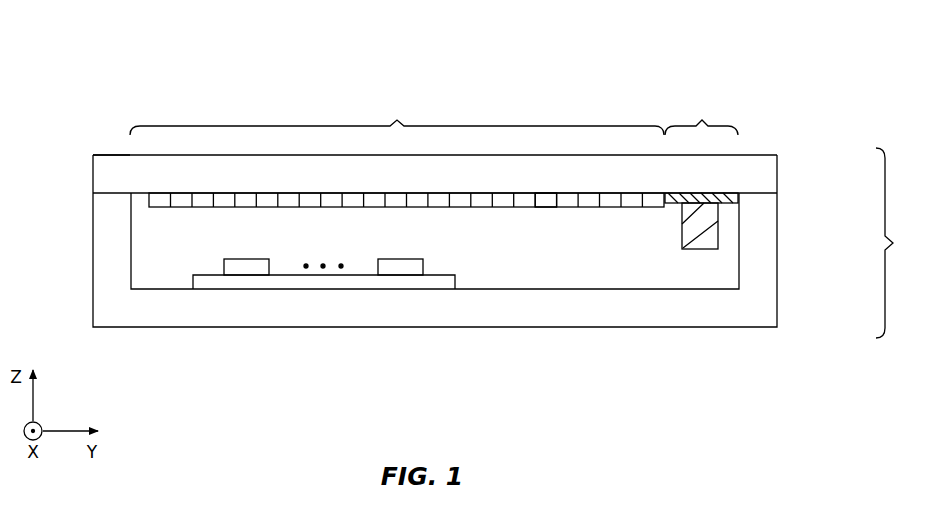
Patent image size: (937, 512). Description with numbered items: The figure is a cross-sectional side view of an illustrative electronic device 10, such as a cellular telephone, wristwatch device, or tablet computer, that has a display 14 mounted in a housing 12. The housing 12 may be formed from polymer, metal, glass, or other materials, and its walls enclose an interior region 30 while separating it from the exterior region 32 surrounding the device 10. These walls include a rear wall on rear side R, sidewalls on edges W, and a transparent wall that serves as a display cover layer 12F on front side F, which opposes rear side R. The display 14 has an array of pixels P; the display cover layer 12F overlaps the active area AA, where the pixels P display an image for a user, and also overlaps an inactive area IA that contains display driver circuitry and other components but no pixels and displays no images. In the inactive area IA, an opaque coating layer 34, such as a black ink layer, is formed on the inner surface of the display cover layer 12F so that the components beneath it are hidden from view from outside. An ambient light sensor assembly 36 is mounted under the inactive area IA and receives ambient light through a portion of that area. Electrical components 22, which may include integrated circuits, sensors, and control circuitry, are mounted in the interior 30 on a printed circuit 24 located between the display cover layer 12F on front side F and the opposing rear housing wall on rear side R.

The electronic device 10 is at (896, 243).
The housing 12 is at (218, 313).
The display cover layer 12F is at (108, 154).
The display 14 is at (226, 93).
The electrical components 22 is at (251, 258).
The printed circuit 24 is at (457, 278).
The interior region 30 is at (152, 247).
The exterior region 32 is at (524, 54).
The opaque coating layer 34 is at (705, 194).
The ambient light sensor assembly 36 is at (719, 225).
The pixels P is at (565, 201).
The active area AA is at (397, 117).
The inactive area IA is at (701, 118).
The front side F is at (141, 69).
The rear side R is at (506, 352).
The edges W is at (61, 288).